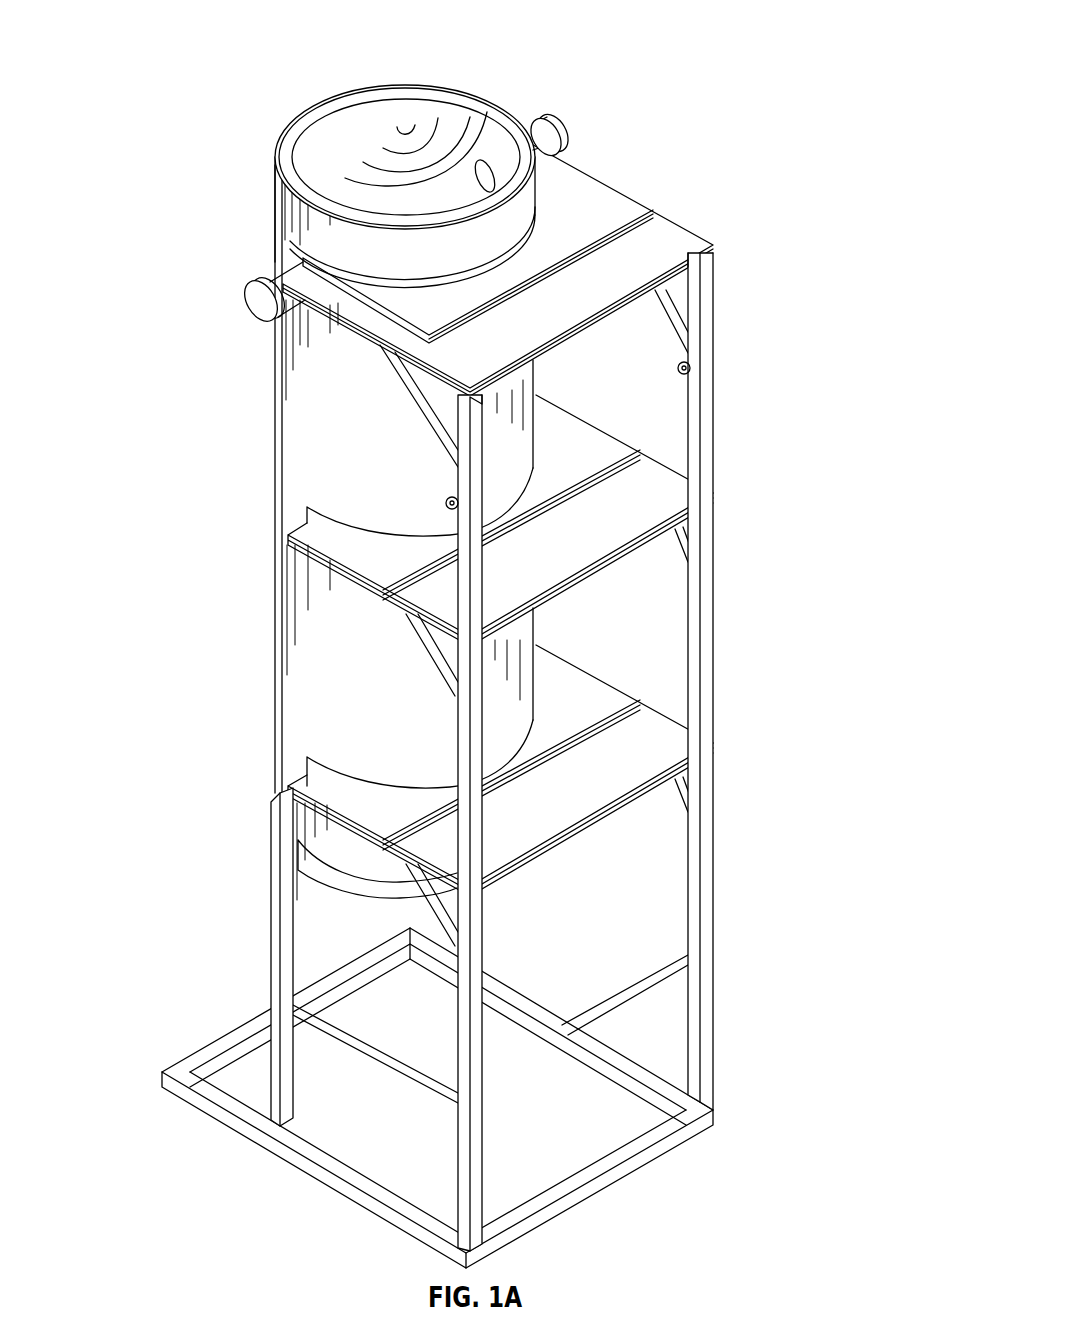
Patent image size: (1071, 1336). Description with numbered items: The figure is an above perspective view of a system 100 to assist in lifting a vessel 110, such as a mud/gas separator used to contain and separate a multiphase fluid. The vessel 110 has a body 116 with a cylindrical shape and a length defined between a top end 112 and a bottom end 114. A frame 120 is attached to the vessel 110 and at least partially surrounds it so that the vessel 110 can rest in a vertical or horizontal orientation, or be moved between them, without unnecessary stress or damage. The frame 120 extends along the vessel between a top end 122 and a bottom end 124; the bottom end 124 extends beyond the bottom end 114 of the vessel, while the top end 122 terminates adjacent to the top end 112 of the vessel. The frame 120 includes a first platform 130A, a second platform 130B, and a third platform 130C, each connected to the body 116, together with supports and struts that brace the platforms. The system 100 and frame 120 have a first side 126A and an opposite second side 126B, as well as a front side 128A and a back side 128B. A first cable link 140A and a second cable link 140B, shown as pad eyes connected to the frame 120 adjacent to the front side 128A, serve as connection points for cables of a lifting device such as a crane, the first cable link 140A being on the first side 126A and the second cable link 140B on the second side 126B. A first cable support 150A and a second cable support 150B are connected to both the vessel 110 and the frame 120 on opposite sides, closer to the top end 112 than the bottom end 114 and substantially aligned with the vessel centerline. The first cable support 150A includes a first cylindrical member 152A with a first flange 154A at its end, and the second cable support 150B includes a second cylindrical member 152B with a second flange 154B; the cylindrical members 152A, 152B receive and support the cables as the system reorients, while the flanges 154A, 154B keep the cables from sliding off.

The system 100 is at (652, 32).
The vessel 110 is at (445, 70).
The top end 112 is at (307, 103).
The bottom end 114 is at (262, 820).
The body 116 is at (386, 92).
The frame 120 is at (726, 700).
The top end 122 is at (706, 222).
The bottom end 124 is at (722, 1112).
The first side 126A is at (323, 1190).
The second side 126B is at (574, 1010).
The front side 128A is at (628, 1182).
The back side 128B is at (224, 1026).
The first platform 130A is at (647, 202).
The second platform 130B is at (607, 433).
The third platform 130C is at (588, 672).
The first cable link 140A is at (446, 498).
The second cable link 140B is at (717, 308).
The first cable support 150A is at (245, 312).
The second cable support 150B is at (570, 126).
The first cylindrical member 152A is at (270, 280).
The second cylindrical member 152B is at (530, 124).
The first flange 154A is at (252, 284).
The second flange 154B is at (545, 116).